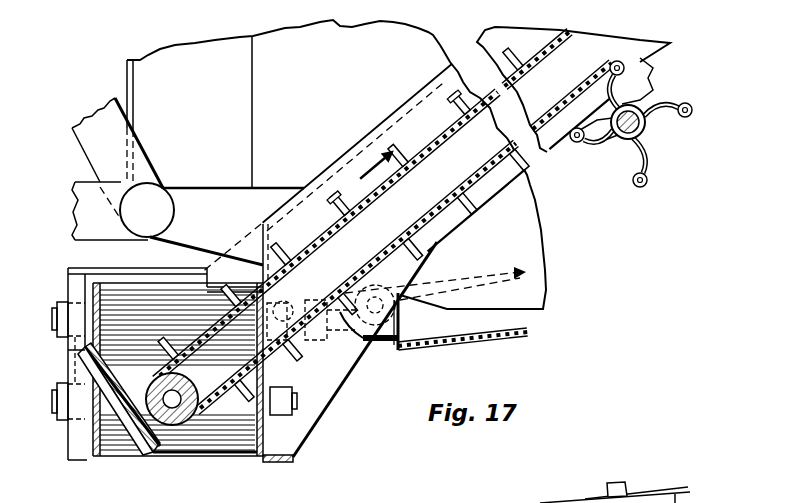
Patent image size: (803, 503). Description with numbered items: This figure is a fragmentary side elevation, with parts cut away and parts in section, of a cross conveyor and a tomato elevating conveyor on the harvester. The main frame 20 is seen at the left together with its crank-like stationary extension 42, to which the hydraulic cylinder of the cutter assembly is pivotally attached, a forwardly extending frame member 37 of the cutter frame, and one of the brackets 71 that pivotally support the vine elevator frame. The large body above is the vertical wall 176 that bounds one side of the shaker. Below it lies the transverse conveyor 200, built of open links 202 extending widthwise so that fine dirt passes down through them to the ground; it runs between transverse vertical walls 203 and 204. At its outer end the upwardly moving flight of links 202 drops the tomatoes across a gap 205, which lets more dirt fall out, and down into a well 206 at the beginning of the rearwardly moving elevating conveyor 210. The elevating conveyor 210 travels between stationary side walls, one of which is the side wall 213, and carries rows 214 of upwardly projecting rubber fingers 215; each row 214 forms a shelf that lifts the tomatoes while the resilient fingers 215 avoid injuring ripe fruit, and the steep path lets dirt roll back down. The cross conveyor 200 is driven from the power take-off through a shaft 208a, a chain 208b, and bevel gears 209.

The vertical wall 176 is at (318, 93).
The crank-like stationary extension 42 is at (80, 221).
The bracket 71 is at (166, 152).
The forwardly extending frame member 37 is at (174, 206).
The main frame 20 is at (220, 232).
The transverse conveyor 200 is at (94, 457).
The open links 202 is at (314, 191).
The transverse vertical wall 203 is at (87, 362).
The transverse vertical wall 204 is at (276, 427).
The gap 205 is at (162, 372).
The well 206 is at (163, 441).
The bevel gears 209 is at (396, 340).
The shaft 208a is at (456, 334).
The chain 208b is at (540, 368).
The elevating conveyor 210 is at (399, 232).
The stationary side wall 213 is at (321, 159).
The row of rubber fingers 214 is at (331, 190).
The rubber finger 215 is at (446, 129).